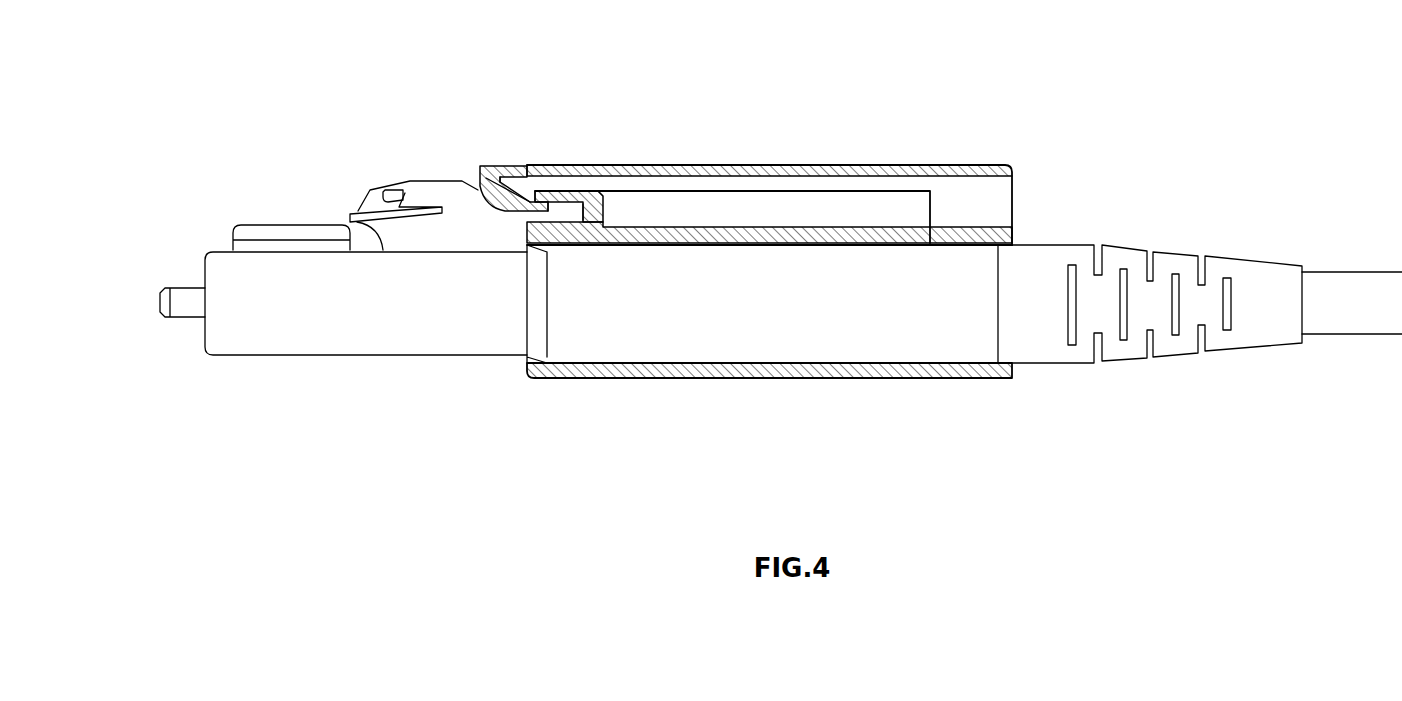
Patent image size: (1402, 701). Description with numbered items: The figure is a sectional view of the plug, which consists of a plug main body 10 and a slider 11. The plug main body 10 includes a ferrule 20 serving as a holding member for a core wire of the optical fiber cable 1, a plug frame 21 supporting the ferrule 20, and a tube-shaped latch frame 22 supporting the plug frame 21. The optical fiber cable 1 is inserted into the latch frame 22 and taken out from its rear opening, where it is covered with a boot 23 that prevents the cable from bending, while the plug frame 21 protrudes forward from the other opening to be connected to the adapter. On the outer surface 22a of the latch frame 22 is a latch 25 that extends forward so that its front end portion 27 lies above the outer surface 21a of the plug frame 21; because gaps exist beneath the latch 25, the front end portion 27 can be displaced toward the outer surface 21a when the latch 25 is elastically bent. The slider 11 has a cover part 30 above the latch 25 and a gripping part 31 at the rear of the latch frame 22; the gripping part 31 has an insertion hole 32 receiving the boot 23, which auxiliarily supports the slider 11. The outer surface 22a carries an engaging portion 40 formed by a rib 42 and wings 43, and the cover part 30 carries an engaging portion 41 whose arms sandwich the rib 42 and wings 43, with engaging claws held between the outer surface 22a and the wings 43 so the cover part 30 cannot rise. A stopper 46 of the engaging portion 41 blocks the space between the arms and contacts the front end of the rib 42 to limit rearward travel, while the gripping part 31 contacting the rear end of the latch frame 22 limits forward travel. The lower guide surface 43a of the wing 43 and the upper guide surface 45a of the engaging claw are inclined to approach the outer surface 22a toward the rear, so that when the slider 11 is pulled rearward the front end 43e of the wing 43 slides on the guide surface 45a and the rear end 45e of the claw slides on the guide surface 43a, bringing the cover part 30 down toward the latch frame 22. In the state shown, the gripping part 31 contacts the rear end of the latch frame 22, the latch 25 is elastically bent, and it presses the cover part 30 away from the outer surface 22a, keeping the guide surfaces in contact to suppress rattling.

The optical fiber cable 1 is at (1371, 262).
The plug main body 10 is at (716, 388).
The slider 11 is at (769, 126).
The ferrule 20 is at (180, 330).
The plug frame 21 is at (366, 290).
The outer surface of plug frame 21a is at (358, 211).
The latch frame 22 is at (769, 269).
The outer surface of latch frame 22a is at (710, 232).
The boot 23 is at (1165, 265).
The latch 25 is at (414, 134).
The front end portion of latch 27 is at (418, 184).
The cover part 30 is at (746, 163).
The gripping part 31 is at (985, 163).
The insertion hole 32 is at (1008, 248).
The engaging portion of latch frame 40 is at (720, 142).
The engaging portion of cover part 41 is at (484, 255).
The rib 42 is at (670, 205).
The wing 43 is at (575, 154).
The guide surface of wing 43a is at (585, 220).
The front end of wing 43e is at (525, 197).
The guide surface of engaging claw 45a is at (523, 193).
The rear end of engaging claw 45e is at (575, 220).
The stopper 46 is at (515, 255).